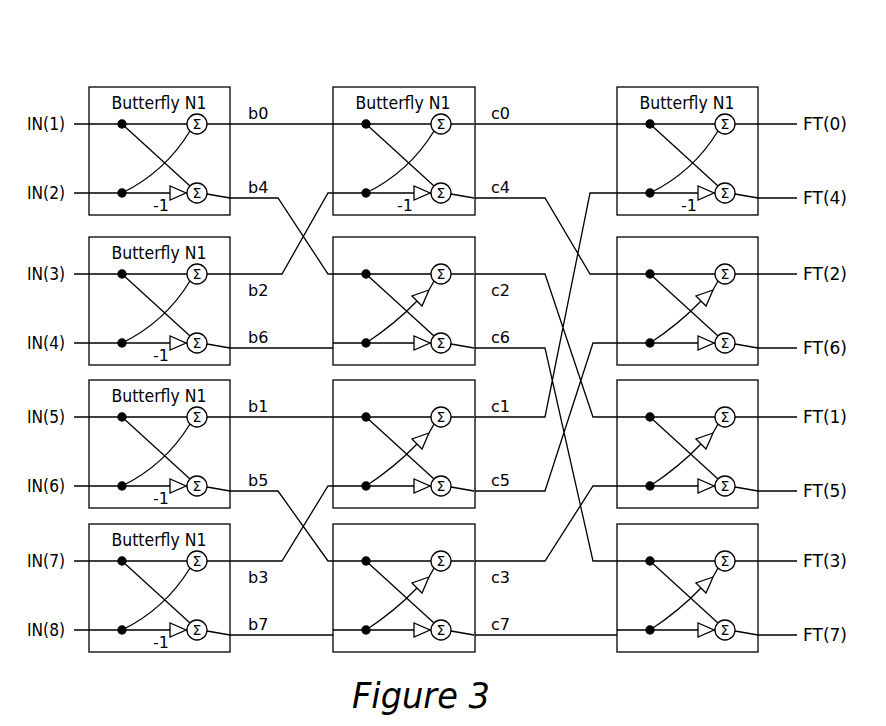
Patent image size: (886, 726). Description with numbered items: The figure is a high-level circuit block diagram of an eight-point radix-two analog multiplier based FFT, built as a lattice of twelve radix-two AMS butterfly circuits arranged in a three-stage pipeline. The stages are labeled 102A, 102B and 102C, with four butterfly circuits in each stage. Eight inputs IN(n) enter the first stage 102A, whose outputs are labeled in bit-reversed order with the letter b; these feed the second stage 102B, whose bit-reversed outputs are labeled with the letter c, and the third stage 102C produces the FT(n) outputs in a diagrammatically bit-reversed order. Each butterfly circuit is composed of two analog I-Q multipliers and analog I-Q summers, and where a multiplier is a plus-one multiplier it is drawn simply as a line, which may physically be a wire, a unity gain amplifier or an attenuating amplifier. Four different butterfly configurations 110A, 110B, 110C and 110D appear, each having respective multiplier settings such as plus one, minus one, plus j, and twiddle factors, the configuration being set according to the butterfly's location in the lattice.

The first stage 102A is at (88, 73).
The second stage 102B is at (333, 73).
The third stage 102C is at (617, 73).
The radix-2 AMS butterfly circuit configuration 110A is at (340, 442).
The radix-2 AMS butterfly circuit configuration 110B is at (620, 252).
The radix-2 AMS butterfly circuit configuration 110C is at (624, 582).
The radix-2 AMS butterfly circuit configuration 110D is at (628, 437).